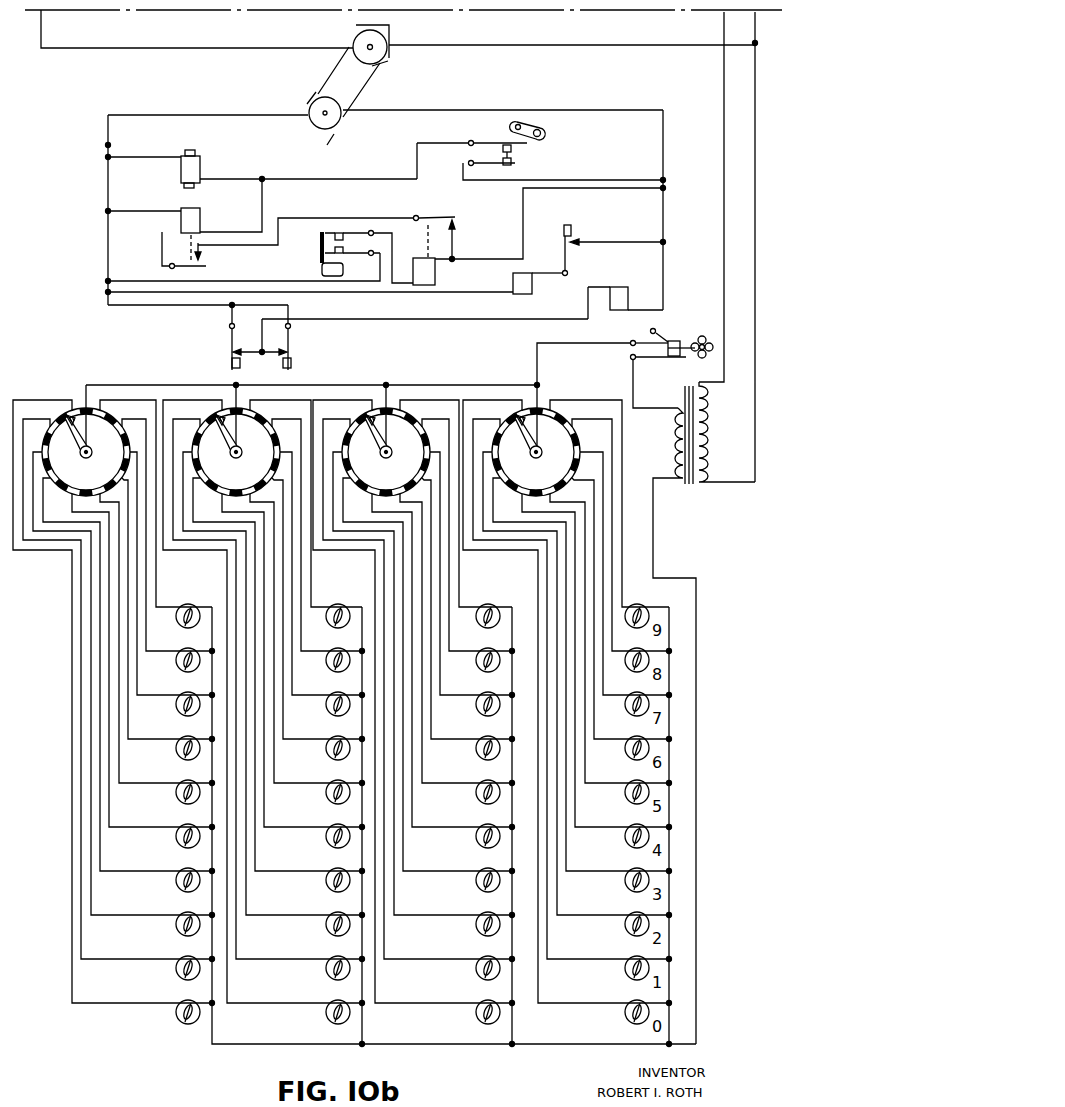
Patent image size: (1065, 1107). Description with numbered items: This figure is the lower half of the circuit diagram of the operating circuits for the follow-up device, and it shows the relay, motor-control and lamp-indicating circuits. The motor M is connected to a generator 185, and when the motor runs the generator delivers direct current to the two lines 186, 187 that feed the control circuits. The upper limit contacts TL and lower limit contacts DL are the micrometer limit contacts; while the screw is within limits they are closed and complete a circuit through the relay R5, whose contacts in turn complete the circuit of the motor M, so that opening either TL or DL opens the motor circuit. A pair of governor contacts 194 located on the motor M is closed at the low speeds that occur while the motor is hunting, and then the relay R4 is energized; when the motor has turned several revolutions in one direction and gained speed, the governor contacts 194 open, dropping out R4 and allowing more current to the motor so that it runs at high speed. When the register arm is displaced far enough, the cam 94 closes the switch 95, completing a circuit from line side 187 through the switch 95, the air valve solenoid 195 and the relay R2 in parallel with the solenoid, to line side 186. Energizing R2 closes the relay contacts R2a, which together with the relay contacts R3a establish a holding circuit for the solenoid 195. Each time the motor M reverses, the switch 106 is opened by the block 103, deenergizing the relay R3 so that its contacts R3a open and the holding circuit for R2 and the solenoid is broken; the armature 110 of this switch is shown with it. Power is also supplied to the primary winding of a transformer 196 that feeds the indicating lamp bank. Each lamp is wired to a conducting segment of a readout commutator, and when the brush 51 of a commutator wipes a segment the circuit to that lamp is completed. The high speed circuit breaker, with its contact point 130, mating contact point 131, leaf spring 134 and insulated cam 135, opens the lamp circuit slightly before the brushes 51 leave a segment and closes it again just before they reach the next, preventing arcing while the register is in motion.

The motor M is at (384, 36).
The generator 185 is at (316, 134).
The line 186 is at (108, 145).
The line 187 is at (663, 152).
The air valve solenoid 195 is at (181, 172).
The relay R2 is at (205, 221).
The relay contacts R2a is at (206, 263).
The switch 106 is at (350, 232).
The armature 110 is at (320, 243).
The block 103 is at (322, 270).
The relay R3 is at (437, 273).
The relay contacts R3a is at (448, 220).
The cam 94 is at (545, 131).
The switch 95 is at (515, 155).
The governor contacts 194 is at (572, 229).
The relay R4 is at (532, 285).
The relay R5 is at (628, 300).
The upper limit contacts TL is at (229, 359).
The lower limit contacts DL is at (292, 359).
The contact point 130 is at (665, 343).
The mating contact point 131 is at (672, 357).
The leaf spring 134 is at (670, 340).
The insulated cam 135 is at (710, 350).
The transformer 196 is at (687, 395).
The brush 51 is at (550, 416).